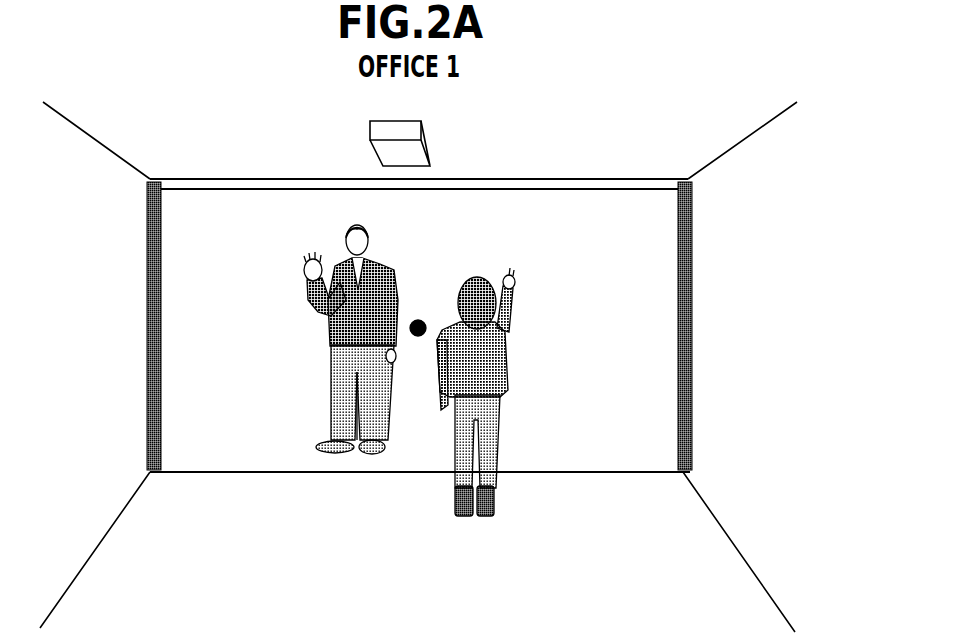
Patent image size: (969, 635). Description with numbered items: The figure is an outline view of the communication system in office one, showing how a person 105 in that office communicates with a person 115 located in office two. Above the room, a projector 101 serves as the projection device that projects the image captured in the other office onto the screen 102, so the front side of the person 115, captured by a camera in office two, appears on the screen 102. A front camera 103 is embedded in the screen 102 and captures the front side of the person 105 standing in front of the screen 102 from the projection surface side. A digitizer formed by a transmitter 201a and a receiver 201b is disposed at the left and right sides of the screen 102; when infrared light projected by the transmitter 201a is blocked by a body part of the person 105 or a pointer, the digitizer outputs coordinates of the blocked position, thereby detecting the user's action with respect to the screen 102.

The projector 101 is at (427, 140).
The screen 102 is at (232, 458).
The front camera 103 is at (418, 320).
The person 105 is at (495, 478).
The person 115 is at (348, 243).
The transmitter 201a is at (147, 270).
The receiver 201b is at (692, 314).